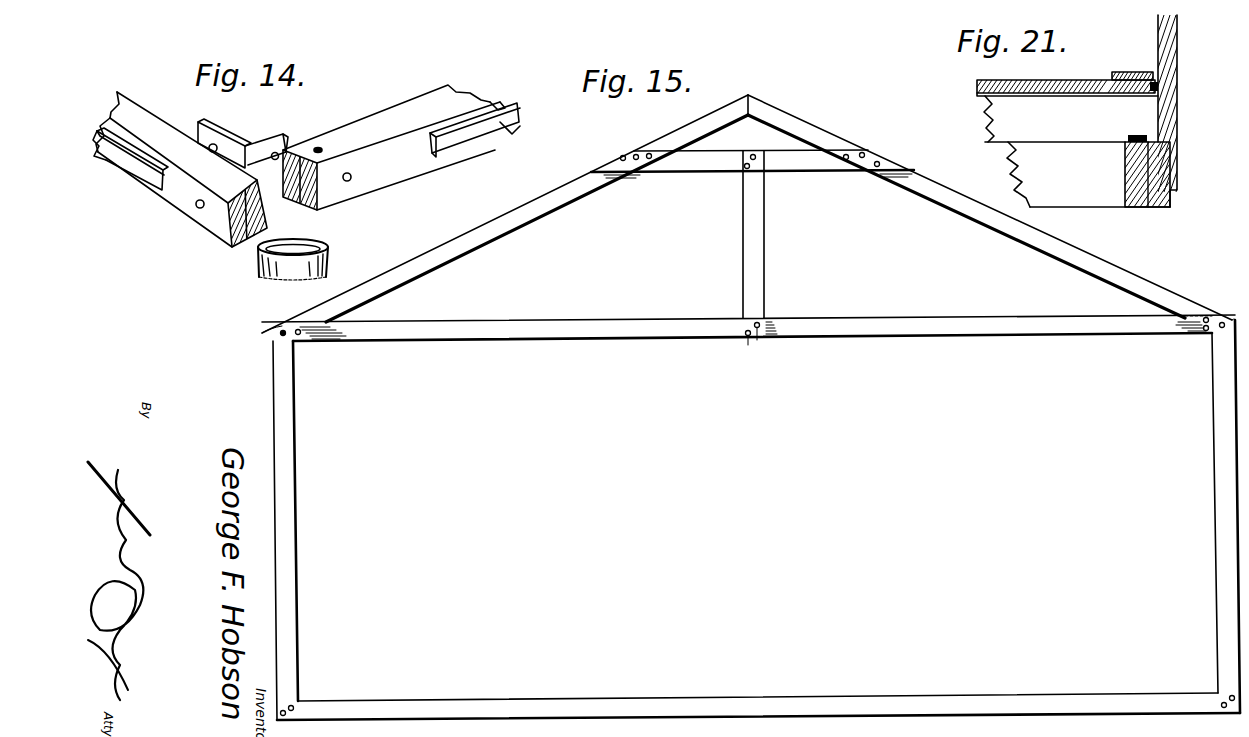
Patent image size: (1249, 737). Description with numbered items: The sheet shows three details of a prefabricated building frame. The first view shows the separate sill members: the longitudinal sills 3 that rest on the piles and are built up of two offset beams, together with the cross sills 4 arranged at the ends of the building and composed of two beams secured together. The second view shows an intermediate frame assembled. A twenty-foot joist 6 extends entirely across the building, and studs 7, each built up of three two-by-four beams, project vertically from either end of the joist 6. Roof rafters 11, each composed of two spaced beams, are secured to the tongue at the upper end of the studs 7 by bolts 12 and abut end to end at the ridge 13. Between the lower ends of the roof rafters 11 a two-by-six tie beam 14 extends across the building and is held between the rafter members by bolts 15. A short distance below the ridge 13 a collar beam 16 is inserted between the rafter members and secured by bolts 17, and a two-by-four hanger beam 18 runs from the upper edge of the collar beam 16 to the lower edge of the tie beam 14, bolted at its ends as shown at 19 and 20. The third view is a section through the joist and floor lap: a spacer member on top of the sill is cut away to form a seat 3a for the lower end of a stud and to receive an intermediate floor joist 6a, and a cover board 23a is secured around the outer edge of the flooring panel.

In FIG. 21, the longitudinal sill 3 is at (1172, 172).
In FIG. 21, the seat 3a is at (1138, 135).
In FIG. 21, the cross sill 4 is at (1012, 168).
In FIG. 15, the joist 6 is at (520, 700).
In FIG. 21, the intermediate floor joist 6a is at (990, 118).
In FIG. 15, the stud 7 is at (274, 518).
In FIG. 15, the roof rafter 11 is at (493, 229).
In FIG. 15, the bolt 12 is at (280, 336).
In FIG. 15, the ridge 13 is at (752, 103).
In FIG. 15, the tie beam 14 is at (654, 342).
In FIG. 15, the bolt 15 is at (324, 339).
In FIG. 15, the collar beam 16 is at (718, 172).
In FIG. 15, the bolt 17 is at (649, 159).
In FIG. 15, the hanger beam 18 is at (764, 248).
In FIG. 15, the bolt connection 19 is at (765, 167).
In FIG. 15, the bolt connection 20 is at (750, 342).
In FIG. 21, the cover board 23a is at (1144, 72).